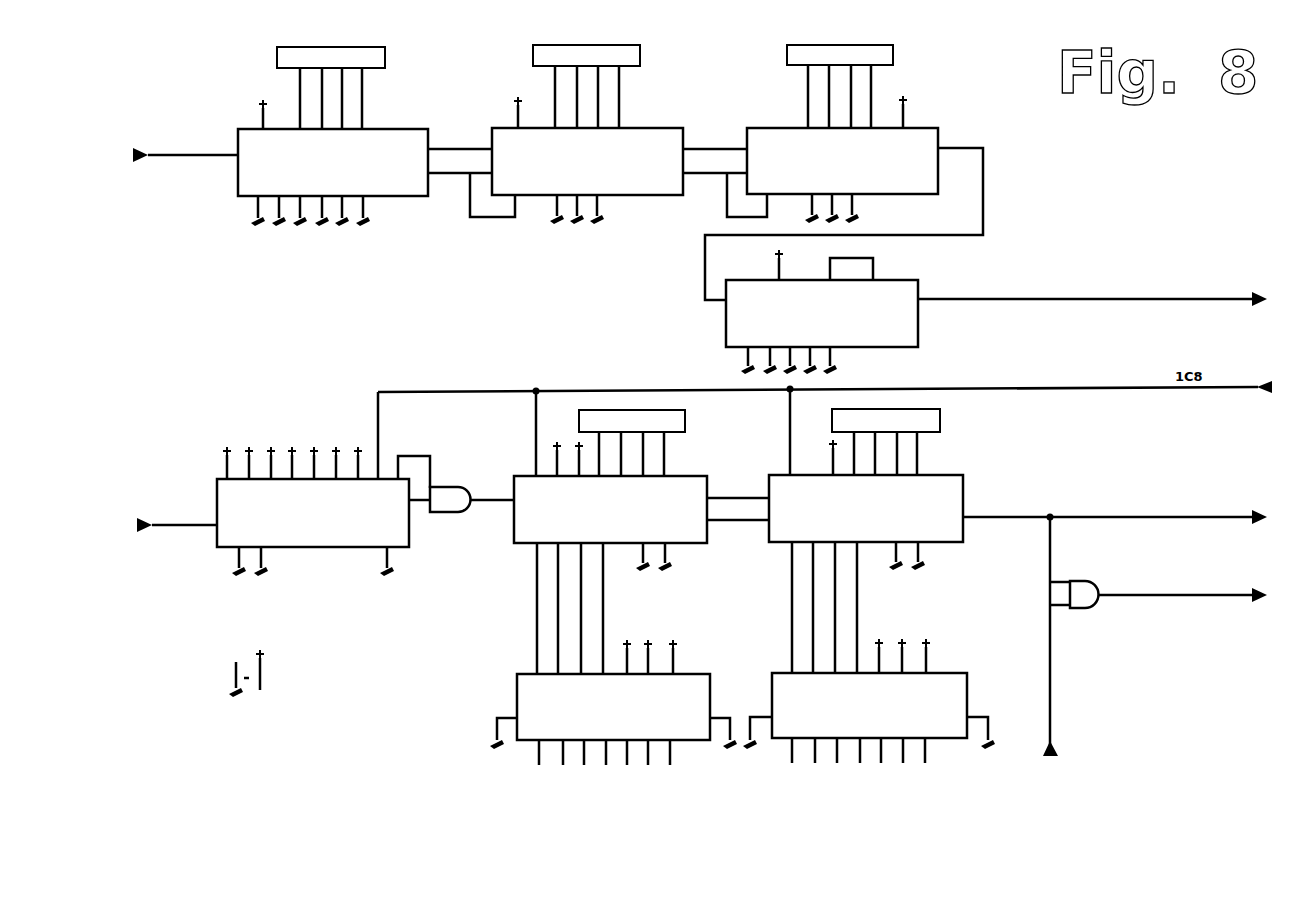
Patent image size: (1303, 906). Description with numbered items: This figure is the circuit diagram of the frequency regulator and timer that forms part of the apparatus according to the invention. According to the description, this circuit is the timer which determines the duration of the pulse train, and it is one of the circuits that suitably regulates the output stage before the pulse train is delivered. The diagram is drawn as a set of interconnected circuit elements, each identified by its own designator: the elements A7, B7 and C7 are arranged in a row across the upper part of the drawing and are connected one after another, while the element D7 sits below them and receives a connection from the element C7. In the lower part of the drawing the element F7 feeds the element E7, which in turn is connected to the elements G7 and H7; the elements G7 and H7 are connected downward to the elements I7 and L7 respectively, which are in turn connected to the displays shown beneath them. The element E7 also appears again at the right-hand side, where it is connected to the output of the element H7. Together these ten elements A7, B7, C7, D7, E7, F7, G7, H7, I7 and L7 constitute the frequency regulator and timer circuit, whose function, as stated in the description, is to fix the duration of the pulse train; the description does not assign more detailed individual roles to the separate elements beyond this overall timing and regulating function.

The first CD4527 BCD rate multiplier (units) A7 is at (312, 136).
The second CD4527 BCD rate multiplier (tens) B7 is at (608, 134).
The third CD4527 BCD rate multiplier (hundreds) C7 is at (844, 172).
The CD4516 binary up/down counter D7 is at (996, 312).
The CD4011 quad NAND gate E7 is at (747, 614).
The CD40103 presettable down counter F7 is at (283, 511).
The CD40192 presettable up/down BCD counter (units) G7 is at (641, 542).
The CD40192 presettable up/down BCD counter (tens) H7 is at (1018, 541).
The CD4511 BCD-to-seven-segment latch/decoder/driver (units display) I7 is at (614, 718).
The CD4511 BCD-to-seven-segment latch/decoder/driver (tens display) L7 is at (869, 718).